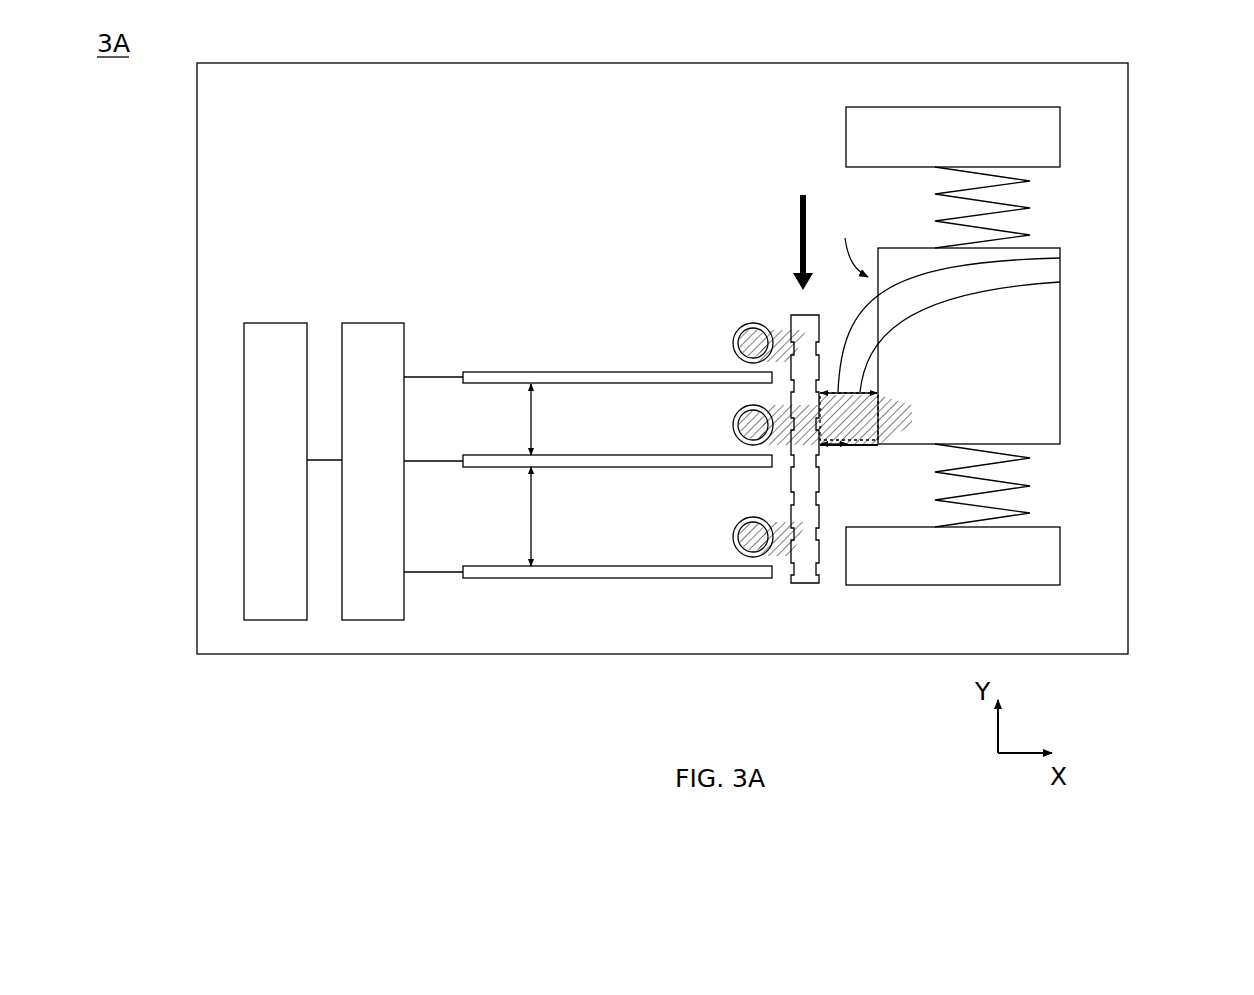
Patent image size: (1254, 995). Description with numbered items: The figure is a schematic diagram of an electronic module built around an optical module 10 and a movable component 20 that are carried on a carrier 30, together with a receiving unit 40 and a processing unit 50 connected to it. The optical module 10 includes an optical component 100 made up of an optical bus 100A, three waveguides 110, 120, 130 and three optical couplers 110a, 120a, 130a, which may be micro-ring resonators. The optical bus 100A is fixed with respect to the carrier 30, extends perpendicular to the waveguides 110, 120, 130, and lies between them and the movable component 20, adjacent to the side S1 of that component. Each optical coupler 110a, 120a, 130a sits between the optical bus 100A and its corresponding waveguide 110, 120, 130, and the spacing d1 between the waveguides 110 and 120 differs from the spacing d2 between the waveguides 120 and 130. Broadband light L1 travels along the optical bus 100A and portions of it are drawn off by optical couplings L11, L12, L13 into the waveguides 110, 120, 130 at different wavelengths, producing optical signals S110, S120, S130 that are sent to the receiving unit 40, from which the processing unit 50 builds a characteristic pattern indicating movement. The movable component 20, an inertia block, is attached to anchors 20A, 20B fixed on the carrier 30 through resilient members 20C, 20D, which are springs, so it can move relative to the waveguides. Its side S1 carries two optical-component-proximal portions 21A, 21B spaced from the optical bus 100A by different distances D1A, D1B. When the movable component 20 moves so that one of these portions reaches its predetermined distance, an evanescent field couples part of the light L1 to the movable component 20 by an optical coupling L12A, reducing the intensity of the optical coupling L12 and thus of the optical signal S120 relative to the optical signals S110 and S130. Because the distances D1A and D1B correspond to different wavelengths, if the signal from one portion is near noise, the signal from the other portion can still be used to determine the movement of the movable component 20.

The optical module 10 is at (498, 640).
The carrier 30 is at (1112, 97).
The processing unit 50 is at (291, 475).
The receiving unit 40 is at (388, 475).
The optical signal S110 is at (438, 379).
The optical signal S120 is at (438, 463).
The optical signal S130 is at (438, 574).
The waveguide 110 is at (617, 384).
The waveguide 120 is at (620, 468).
The waveguide 130 is at (625, 580).
The distance d1 is at (513, 419).
The distance d2 is at (513, 516).
The optical coupler 110a is at (742, 325).
The optical coupler 120a is at (733, 425).
The optical coupler 130a is at (733, 537).
The optical coupling L11 is at (788, 340).
The optical coupling L12 is at (782, 448).
The optical coupling L13 is at (785, 582).
The optical coupling L12A is at (910, 418).
The optical bus 100A is at (801, 587).
The optical component 100 is at (557, 600).
The light L1 is at (800, 230).
The side S1 is at (848, 243).
The anchor 20A is at (1045, 140).
The anchor 20B is at (1040, 555).
The resilient member 20C is at (1032, 206).
The resilient member 20D is at (1030, 487).
The movable component 20 is at (1045, 325).
The optical-component-proximal portion 21B is at (872, 348).
The distance D1B is at (843, 390).
The distance D1A is at (832, 447).
The optical-component-proximal portion 21A is at (850, 447).